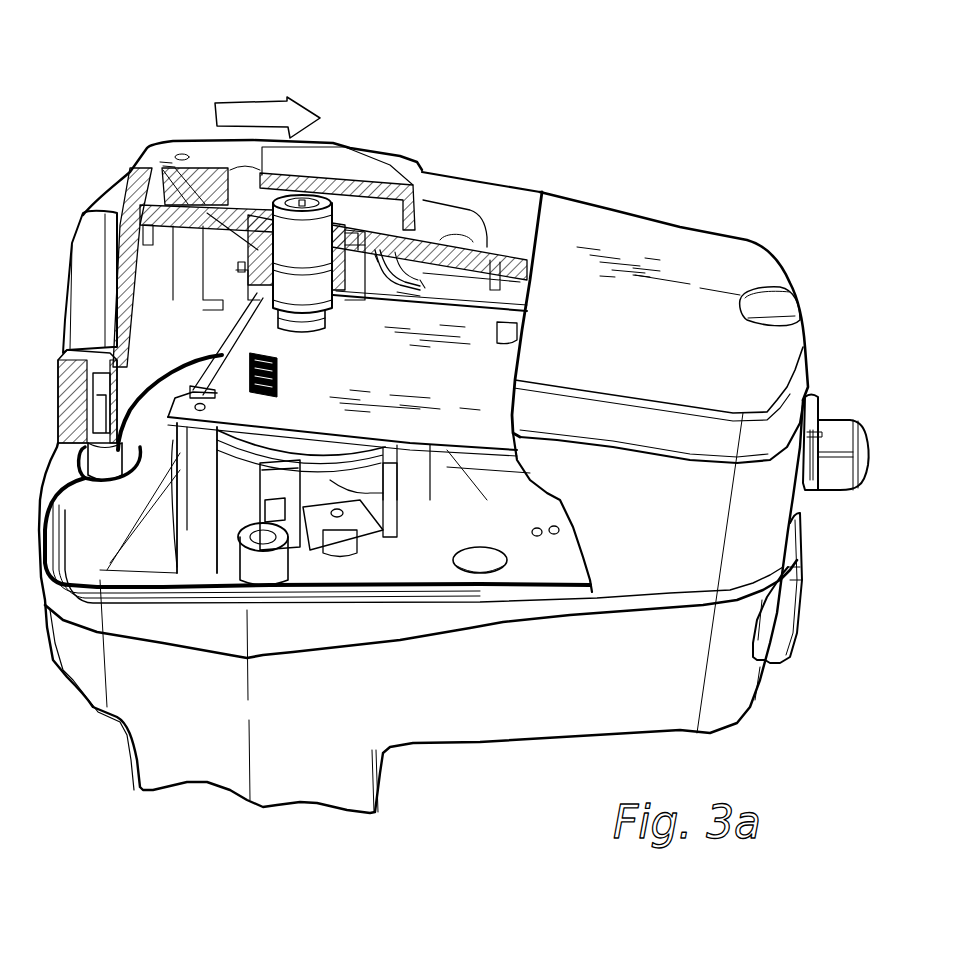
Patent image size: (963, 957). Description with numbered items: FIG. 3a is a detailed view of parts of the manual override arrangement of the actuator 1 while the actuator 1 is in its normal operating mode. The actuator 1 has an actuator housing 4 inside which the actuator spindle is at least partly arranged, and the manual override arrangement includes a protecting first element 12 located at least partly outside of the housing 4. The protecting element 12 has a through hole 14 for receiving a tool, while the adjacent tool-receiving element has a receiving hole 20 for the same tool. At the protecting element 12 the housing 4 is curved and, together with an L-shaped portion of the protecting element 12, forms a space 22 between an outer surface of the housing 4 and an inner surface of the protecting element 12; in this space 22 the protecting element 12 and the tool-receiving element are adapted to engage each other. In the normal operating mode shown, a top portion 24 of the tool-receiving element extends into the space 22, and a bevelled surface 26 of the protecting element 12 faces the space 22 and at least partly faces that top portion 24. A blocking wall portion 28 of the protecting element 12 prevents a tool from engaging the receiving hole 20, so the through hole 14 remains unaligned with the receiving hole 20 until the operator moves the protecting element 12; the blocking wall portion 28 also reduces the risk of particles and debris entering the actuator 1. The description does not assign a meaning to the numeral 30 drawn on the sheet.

The actuator 1 is at (88, 58).
The actuator housing 4 is at (75, 313).
The protecting first element 12 is at (392, 167).
The through hole 14 is at (235, 183).
The receiving hole 20 is at (300, 198).
The space 22 is at (425, 172).
The top portion 24 is at (318, 197).
The bevelled surface 26 is at (270, 207).
The blocking wall portion 28 is at (273, 157).
The pump assembly 30 is at (303, 438).